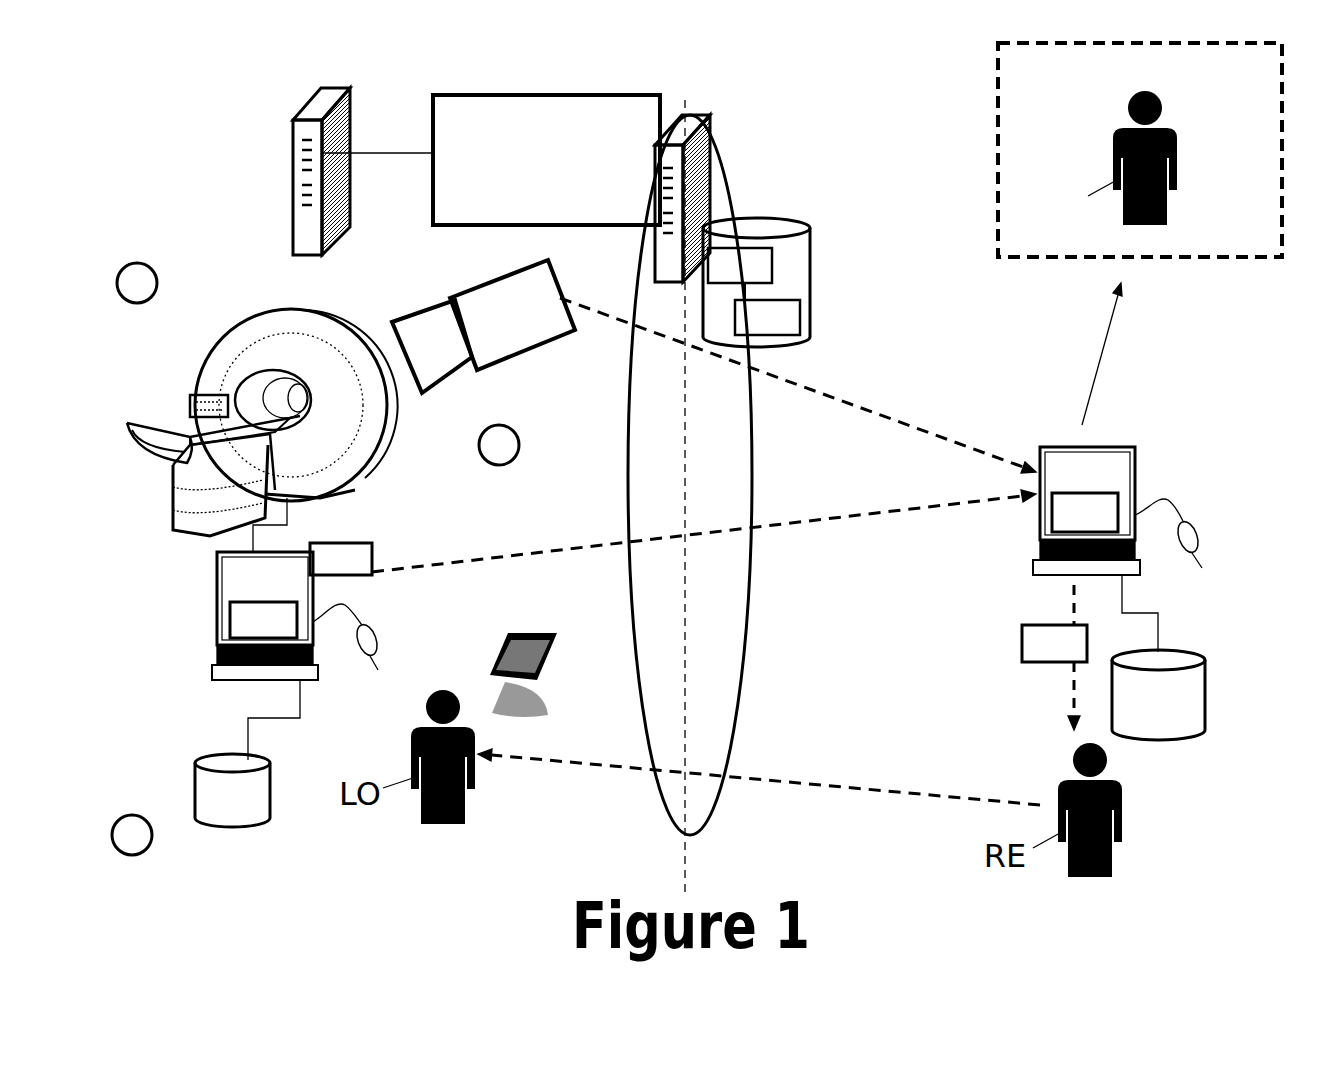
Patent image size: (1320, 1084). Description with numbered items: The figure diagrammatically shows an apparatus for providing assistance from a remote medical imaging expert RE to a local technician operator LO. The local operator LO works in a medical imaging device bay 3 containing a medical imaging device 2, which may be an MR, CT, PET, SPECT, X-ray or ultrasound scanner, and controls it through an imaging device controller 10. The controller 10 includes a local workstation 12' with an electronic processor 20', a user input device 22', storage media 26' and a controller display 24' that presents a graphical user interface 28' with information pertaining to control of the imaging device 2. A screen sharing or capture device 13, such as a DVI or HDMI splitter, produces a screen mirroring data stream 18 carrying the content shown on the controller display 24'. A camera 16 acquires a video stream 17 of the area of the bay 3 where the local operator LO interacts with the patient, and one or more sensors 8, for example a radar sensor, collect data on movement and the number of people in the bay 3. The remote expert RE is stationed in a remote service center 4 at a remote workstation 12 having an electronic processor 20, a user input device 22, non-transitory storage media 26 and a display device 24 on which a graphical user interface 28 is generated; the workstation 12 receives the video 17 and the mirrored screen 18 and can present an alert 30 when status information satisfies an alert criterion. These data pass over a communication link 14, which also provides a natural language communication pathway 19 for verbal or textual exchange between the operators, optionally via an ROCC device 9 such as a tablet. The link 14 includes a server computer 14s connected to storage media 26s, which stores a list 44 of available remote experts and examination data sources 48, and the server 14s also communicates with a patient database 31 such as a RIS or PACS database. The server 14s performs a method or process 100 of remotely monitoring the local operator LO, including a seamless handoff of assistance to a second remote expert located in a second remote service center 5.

The medical imaging device 2 is at (187, 365).
The medical imaging device bay 3 is at (342, 856).
The remote service center 4 is at (812, 856).
The second remote service center 5 is at (1140, 150).
The sensor 8 is at (160, 272).
The ROCC device 9 is at (548, 660).
The imaging device controller 10 is at (198, 705).
The remote workstation 12 is at (1096, 467).
The local workstation 12' is at (262, 656).
The screen sharing or capture device 13 is at (378, 543).
The communication link 14 is at (752, 470).
The server computer 14s is at (713, 200).
The camera 16 is at (446, 276).
The video stream 17 is at (620, 318).
The screen mirroring data stream 18 is at (537, 553).
The natural language communication pathway 19 is at (565, 765).
The electronic processor 20 is at (1049, 511).
The electronic processor 20' is at (219, 627).
The user input device 22 is at (1193, 543).
The user input device 22' is at (359, 653).
The display device 24 is at (1085, 479).
The controller display 24' is at (265, 585).
The non-transitory storage media 26 is at (1203, 663).
The non-transitory storage media 26' is at (281, 779).
The non-transitory storage media 26s is at (811, 282).
The graphical user interface 28 is at (1085, 513).
The graphical user interface 28' is at (263, 620).
The alert 30 is at (1054, 657).
The patient database 31 is at (293, 128).
The list of available remote experts 44 is at (740, 266).
The data source 48 is at (767, 318).
The method or process 100 is at (546, 160).